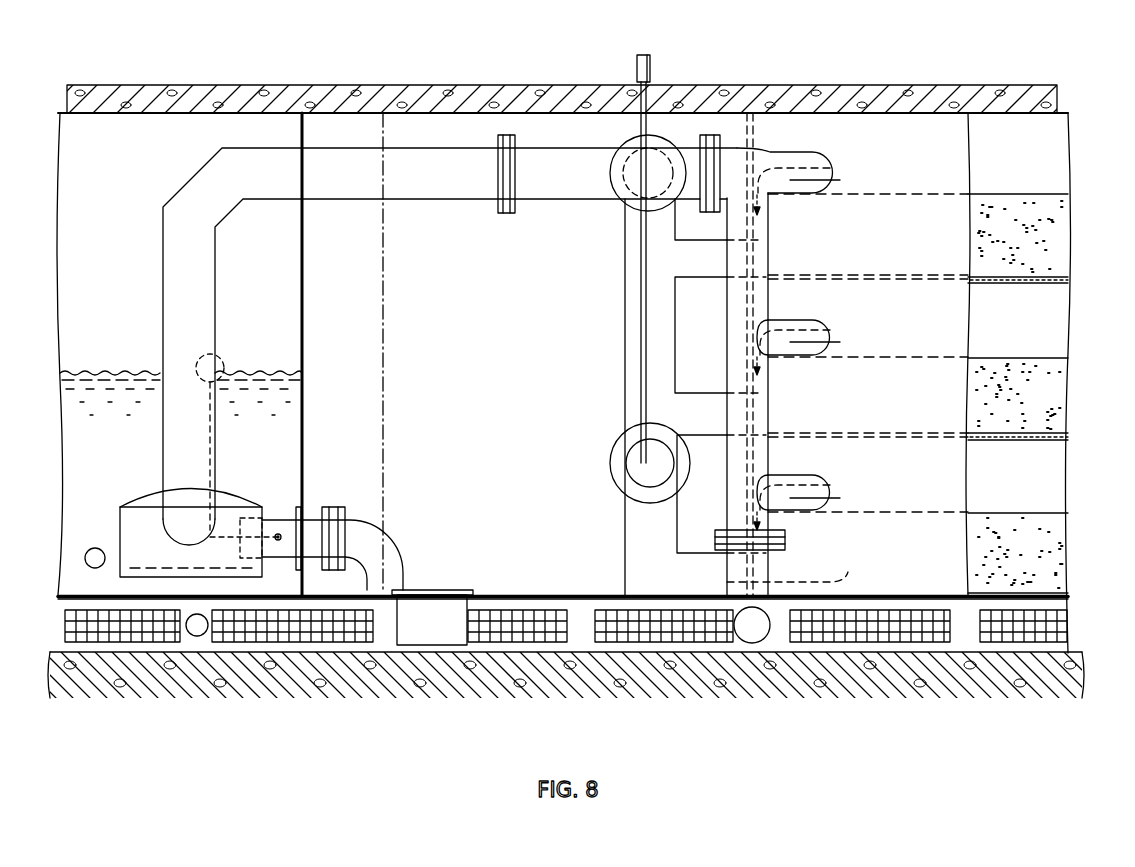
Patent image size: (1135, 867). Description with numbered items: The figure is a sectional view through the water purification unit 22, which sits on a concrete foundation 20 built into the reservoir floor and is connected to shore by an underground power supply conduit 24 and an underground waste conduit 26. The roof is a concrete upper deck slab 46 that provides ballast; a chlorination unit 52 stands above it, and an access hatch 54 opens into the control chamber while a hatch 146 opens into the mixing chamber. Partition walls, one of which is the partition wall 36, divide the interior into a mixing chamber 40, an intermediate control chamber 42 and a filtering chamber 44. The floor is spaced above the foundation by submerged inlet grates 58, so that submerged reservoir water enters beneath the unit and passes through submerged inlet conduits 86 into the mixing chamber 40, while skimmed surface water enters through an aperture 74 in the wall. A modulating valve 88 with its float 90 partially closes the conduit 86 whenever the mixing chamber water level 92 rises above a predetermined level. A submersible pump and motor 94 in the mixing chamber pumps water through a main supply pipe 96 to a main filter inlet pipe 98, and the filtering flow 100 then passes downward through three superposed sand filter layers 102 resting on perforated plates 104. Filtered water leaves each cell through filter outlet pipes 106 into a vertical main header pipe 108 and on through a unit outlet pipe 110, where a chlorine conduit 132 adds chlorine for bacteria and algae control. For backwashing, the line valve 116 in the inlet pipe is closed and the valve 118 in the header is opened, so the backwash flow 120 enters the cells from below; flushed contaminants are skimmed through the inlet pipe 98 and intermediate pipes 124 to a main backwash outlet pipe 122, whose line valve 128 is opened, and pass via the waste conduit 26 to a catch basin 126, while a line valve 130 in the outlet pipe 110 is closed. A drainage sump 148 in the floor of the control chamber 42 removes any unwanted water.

The foundation 20 is at (672, 686).
The water purification unit 22 is at (793, 76).
The underground power supply conduit 24 is at (200, 636).
The underground waste conduit 26 is at (758, 640).
The partition wall 36 is at (305, 300).
The mixing chamber 40 is at (89, 292).
The intermediate control chamber 42 is at (472, 345).
The filtering chamber 44 is at (1006, 160).
The upper deck slab 46 is at (1058, 92).
The chlorination unit 52 is at (651, 68).
The access hatch 54 is at (520, 95).
The submerged inlet grates 58 is at (115, 644).
The aperture 74 is at (94, 548).
The submerged inlet conduit 86 is at (403, 565).
The modulating valve 88 is at (333, 507).
The float 90 is at (222, 362).
The mixing chamber water level 92 is at (98, 372).
The submersible pump and motor 94 is at (137, 545).
The main supply pipe 96 is at (332, 200).
The main filter inlet pipe 98 is at (778, 152).
The filtering flow 100 is at (843, 190).
The filter layer 102 is at (1070, 238).
The perforated plate 104 is at (1018, 283).
The filter outlet pipe 106 is at (683, 280).
The main header pipe 108 is at (625, 343).
The unit outlet pipe 110 is at (628, 448).
The line valve 116 is at (708, 212).
The valve 118 is at (653, 140).
The backwash flow 120 is at (845, 166).
The main backwash outlet pipe 122 is at (772, 470).
The intermediate pipe 124 is at (822, 320).
The catch basin 126 is at (772, 393).
The line valve 128 is at (786, 540).
The line valve 130 is at (612, 470).
The chlorine conduit 132 is at (641, 308).
The hatch 146 is at (118, 96).
The drainage sump 148 is at (440, 590).